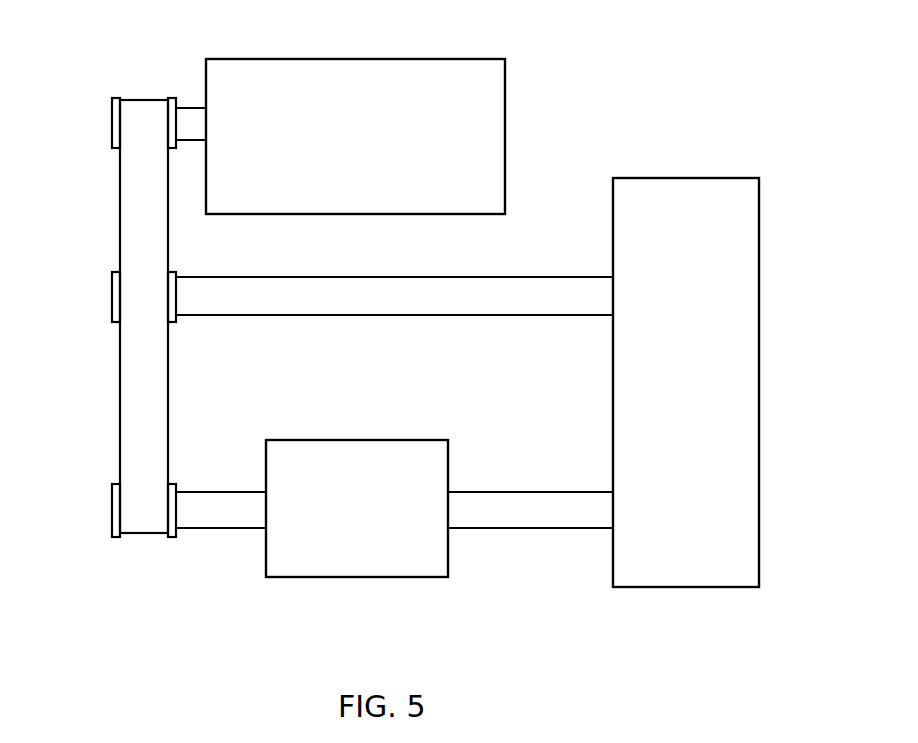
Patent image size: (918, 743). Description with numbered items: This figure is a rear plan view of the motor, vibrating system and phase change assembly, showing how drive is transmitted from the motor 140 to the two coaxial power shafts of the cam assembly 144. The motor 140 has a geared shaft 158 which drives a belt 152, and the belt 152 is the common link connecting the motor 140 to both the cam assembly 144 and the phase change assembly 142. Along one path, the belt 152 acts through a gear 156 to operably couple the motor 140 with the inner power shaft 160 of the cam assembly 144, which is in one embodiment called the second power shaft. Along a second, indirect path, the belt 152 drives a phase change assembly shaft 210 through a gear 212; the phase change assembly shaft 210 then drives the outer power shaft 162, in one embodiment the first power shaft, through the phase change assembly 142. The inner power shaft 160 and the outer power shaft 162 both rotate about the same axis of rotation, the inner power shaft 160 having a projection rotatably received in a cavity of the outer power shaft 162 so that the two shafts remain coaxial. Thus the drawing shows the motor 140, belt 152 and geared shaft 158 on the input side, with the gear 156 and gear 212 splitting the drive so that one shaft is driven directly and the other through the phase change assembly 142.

The motor 140 is at (505, 108).
The phase change assembly 142 is at (759, 203).
The cam assembly 144 is at (340, 580).
The belt 152 is at (120, 223).
The gear 156 is at (112, 502).
The geared shaft 158 is at (112, 143).
The inner power shaft 160 is at (192, 493).
The outer power shaft 162 is at (503, 490).
The phase change assembly shaft 210 is at (508, 280).
The gear 212 is at (112, 303).